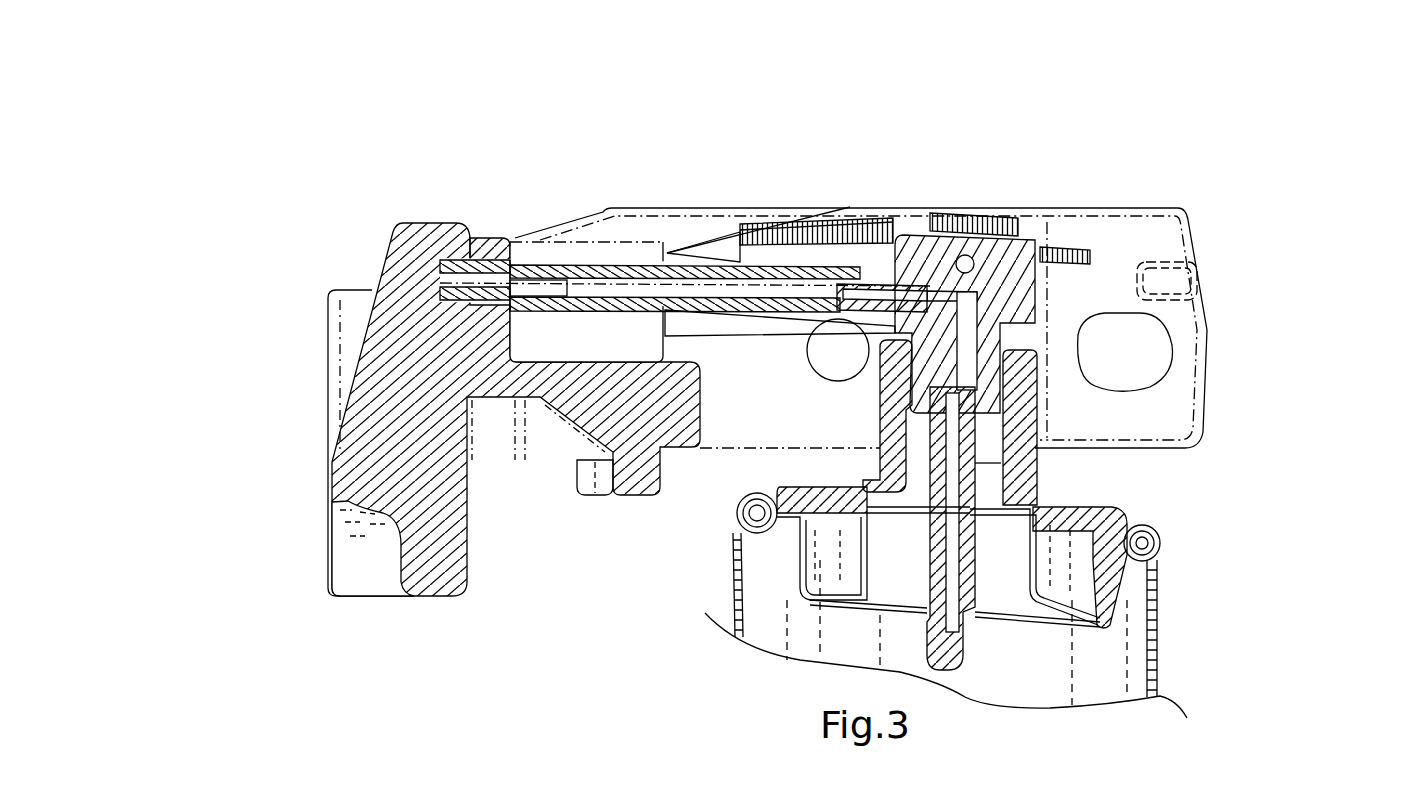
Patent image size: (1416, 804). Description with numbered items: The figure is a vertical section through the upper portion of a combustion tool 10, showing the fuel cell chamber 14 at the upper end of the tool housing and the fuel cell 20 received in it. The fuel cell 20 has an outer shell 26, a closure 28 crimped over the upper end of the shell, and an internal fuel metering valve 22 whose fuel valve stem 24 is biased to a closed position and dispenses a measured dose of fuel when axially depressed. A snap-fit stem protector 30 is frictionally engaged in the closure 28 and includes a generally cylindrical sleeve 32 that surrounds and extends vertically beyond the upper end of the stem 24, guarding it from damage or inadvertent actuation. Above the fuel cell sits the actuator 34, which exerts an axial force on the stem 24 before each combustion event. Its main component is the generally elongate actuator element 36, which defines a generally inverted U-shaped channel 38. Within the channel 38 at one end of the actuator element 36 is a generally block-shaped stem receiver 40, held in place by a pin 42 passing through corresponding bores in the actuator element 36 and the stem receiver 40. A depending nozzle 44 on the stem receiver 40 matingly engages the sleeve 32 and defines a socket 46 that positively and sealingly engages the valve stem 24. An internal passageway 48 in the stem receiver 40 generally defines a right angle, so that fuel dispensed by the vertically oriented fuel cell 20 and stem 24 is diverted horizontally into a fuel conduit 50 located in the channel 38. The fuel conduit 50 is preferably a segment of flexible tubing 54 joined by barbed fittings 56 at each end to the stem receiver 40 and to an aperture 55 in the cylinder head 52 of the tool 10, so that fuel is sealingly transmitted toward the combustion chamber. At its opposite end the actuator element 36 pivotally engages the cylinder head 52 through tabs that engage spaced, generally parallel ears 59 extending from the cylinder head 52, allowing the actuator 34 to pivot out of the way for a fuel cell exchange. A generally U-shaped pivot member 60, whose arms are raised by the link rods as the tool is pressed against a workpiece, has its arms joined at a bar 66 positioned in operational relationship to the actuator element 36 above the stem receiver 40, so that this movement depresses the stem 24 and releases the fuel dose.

The combustion tool 10 is at (170, 213).
The fuel cell chamber 14 is at (1150, 230).
The fuel cell 20 is at (1227, 650).
The internal fuel metering valve 22 is at (992, 570).
The fuel valve stem 24 is at (1035, 478).
The outer shell 26 is at (1160, 620).
The closure 28 is at (1167, 507).
The stem protector 30 is at (1095, 503).
The sleeve 32 is at (1035, 372).
The actuator 34 is at (867, 221).
The actuator element 36 is at (827, 243).
The channel 38 is at (1063, 279).
The stem receiver 40 is at (1075, 328).
The pin 42 is at (1005, 270).
The nozzle 44 is at (990, 337).
The socket 46 is at (873, 400).
The internal passageway 48 is at (1033, 280).
The fuel conduit 50 is at (686, 292).
The cylinder head 52 is at (462, 222).
The flexible tubing 54 is at (585, 292).
The aperture 55 is at (471, 236).
The barbed fittings 56 is at (460, 283).
The ears 59 is at (519, 238).
The pivot member 60 is at (857, 240).
The bar 66 is at (970, 255).